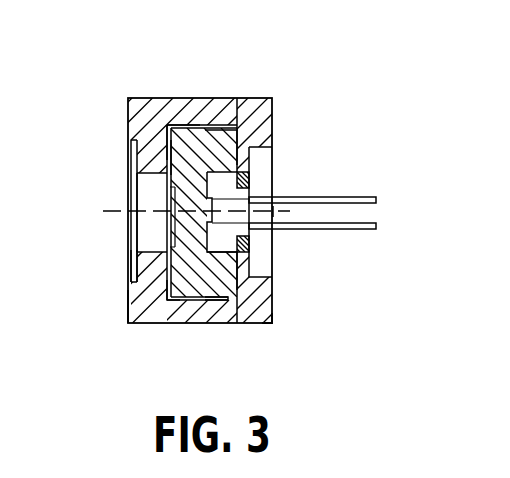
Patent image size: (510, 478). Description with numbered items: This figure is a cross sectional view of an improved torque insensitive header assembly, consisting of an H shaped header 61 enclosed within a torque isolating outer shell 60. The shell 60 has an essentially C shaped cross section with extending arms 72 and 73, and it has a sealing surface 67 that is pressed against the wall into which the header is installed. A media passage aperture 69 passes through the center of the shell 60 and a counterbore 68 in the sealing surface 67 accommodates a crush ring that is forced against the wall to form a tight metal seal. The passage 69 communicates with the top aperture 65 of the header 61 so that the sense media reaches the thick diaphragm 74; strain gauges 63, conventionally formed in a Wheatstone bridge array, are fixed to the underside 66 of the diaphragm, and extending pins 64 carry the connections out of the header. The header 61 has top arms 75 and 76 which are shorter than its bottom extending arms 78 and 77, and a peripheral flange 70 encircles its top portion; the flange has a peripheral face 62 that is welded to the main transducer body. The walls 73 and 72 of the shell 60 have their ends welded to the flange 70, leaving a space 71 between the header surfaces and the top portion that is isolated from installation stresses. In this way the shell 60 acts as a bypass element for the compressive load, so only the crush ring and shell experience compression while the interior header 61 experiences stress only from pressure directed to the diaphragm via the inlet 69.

The torque isolating outer shell 60 is at (175, 128).
The H shaped header 61 is at (271, 323).
The peripheral face 62 is at (273, 298).
The strain gauges 63 is at (212, 193).
The extending pins 64 is at (348, 195).
The top aperture 65 is at (162, 302).
The underside of the diaphragm 66 is at (207, 240).
The sealing surface 67 is at (127, 308).
The counterbore 68 is at (133, 263).
The media passage aperture 69 is at (142, 222).
The peripheral flange 70 is at (262, 120).
The space 71 is at (216, 301).
The extending arm 72 is at (218, 120).
The extending arm 73 is at (191, 313).
The thick diaphragm 74 is at (176, 165).
The top arm 75 is at (190, 160).
The top arm 76 is at (172, 300).
The bottom extending arm 77 is at (222, 153).
The bottom extending arm 78 is at (232, 273).